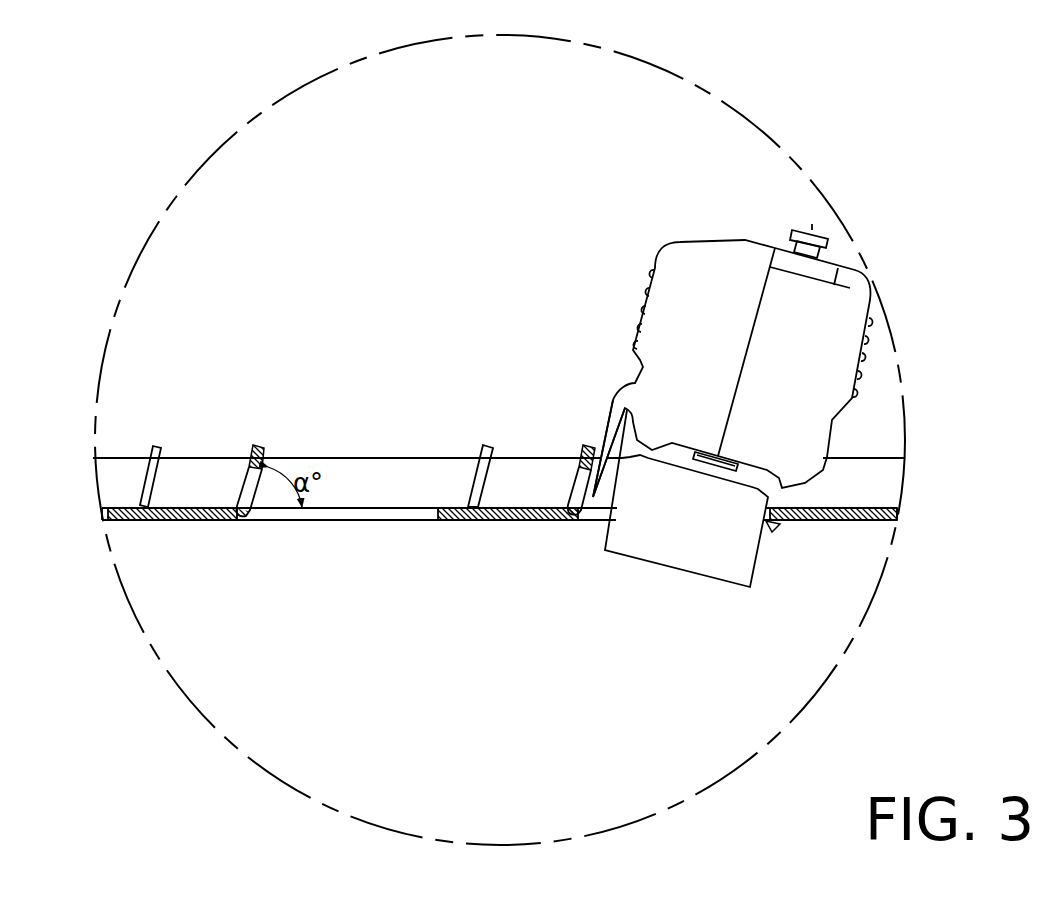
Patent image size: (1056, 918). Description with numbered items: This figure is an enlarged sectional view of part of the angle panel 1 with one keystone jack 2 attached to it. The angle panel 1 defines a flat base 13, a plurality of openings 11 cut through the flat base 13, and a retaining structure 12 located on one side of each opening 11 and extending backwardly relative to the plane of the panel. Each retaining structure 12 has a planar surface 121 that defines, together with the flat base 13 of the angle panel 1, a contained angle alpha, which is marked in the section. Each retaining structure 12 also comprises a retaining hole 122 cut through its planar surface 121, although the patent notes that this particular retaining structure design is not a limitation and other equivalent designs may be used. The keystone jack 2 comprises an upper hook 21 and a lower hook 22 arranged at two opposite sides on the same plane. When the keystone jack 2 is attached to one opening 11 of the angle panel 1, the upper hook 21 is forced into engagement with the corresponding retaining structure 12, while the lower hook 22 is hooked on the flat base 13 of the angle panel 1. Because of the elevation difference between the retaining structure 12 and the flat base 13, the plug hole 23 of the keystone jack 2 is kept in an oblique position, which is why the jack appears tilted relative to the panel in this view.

The angle panel 1 is at (389, 440).
The opening 11 is at (592, 522).
The retaining structure 12 is at (377, 468).
The flat base 13 is at (493, 514).
The planar surface 121 is at (266, 456).
The retaining hole 122 is at (245, 482).
The keystone jack 2 is at (695, 262).
The upper hook 21 is at (575, 480).
The lower hook 22 is at (772, 523).
The plug hole 23 is at (682, 578).